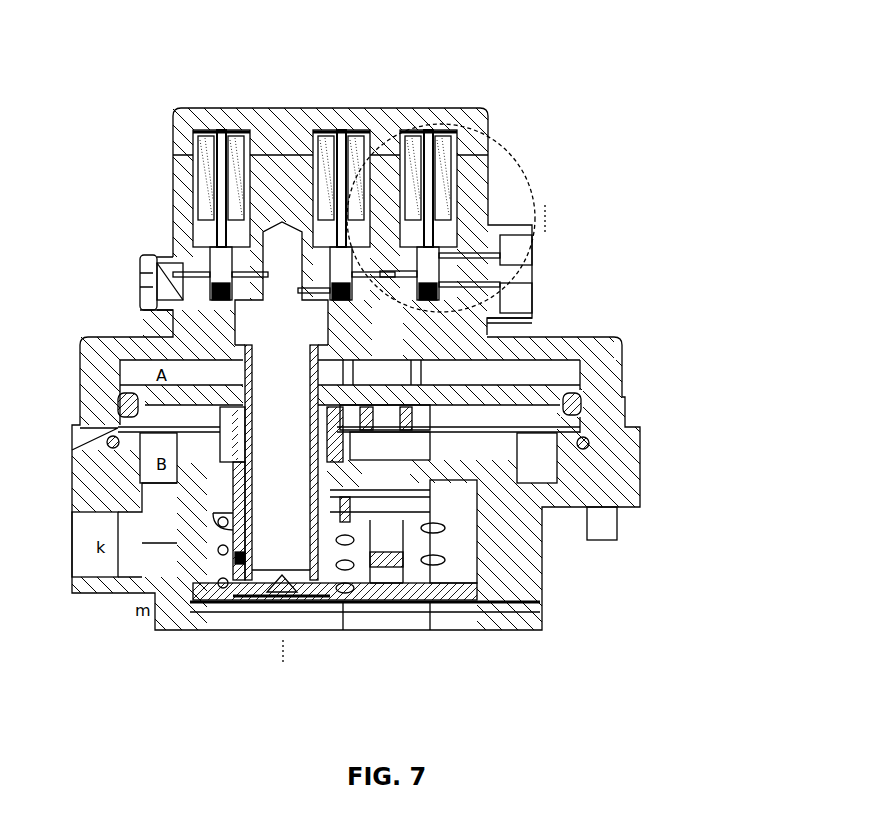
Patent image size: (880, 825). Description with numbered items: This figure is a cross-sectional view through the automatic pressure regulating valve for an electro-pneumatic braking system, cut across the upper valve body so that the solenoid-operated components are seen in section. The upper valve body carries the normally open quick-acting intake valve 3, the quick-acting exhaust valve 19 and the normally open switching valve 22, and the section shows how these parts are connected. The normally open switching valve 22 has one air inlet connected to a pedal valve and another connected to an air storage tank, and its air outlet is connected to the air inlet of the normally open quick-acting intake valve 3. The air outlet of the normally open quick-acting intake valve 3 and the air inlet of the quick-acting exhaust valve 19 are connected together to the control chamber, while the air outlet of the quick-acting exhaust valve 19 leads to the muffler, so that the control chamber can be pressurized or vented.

The normally open quick-acting intake valve 3 is at (178, 112).
The quick-acting exhaust valve 19 is at (207, 233).
The normally open switching valve 22 is at (445, 233).